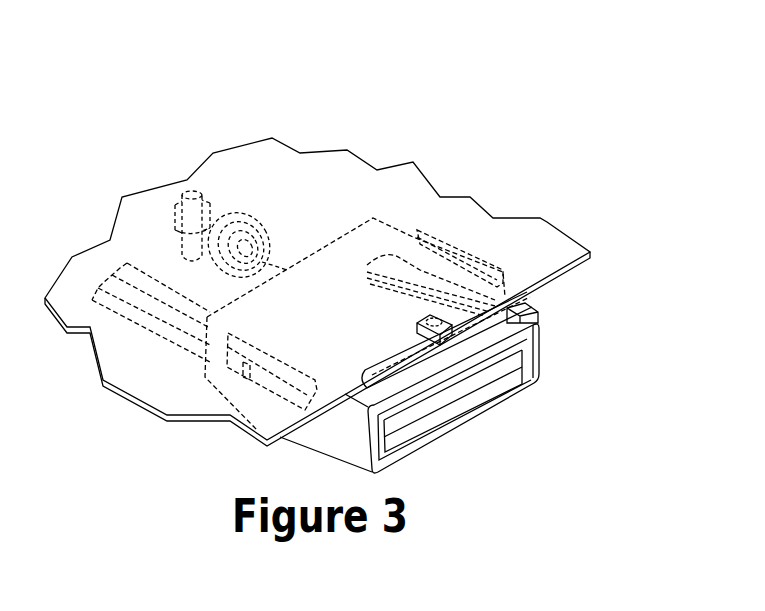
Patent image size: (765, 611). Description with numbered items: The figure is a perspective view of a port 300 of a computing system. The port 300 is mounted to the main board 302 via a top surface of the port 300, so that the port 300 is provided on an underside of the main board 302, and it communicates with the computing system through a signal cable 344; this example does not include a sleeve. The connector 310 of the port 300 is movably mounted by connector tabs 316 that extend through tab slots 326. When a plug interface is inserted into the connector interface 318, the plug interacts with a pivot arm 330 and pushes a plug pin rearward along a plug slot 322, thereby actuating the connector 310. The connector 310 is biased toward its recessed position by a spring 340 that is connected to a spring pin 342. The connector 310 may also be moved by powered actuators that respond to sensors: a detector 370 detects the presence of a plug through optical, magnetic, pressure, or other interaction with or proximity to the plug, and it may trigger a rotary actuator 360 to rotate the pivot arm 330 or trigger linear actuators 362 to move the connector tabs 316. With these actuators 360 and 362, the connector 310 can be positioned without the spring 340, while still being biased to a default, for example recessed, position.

The port 300 is at (502, 138).
The main board 302 is at (379, 185).
The connector 310 is at (542, 358).
The connector tabs 316 is at (456, 228).
The connector interface 318 is at (462, 402).
The plug slot 322 is at (377, 261).
The tab slots 326 is at (243, 437).
The pivot arm 330 is at (540, 318).
The spring 340 is at (263, 218).
The spring pin 342 is at (190, 190).
The signal cable 344 is at (147, 267).
The rotary actuator 360 is at (417, 338).
The linear actuators 362 is at (473, 247).
The detector 370 is at (423, 313).